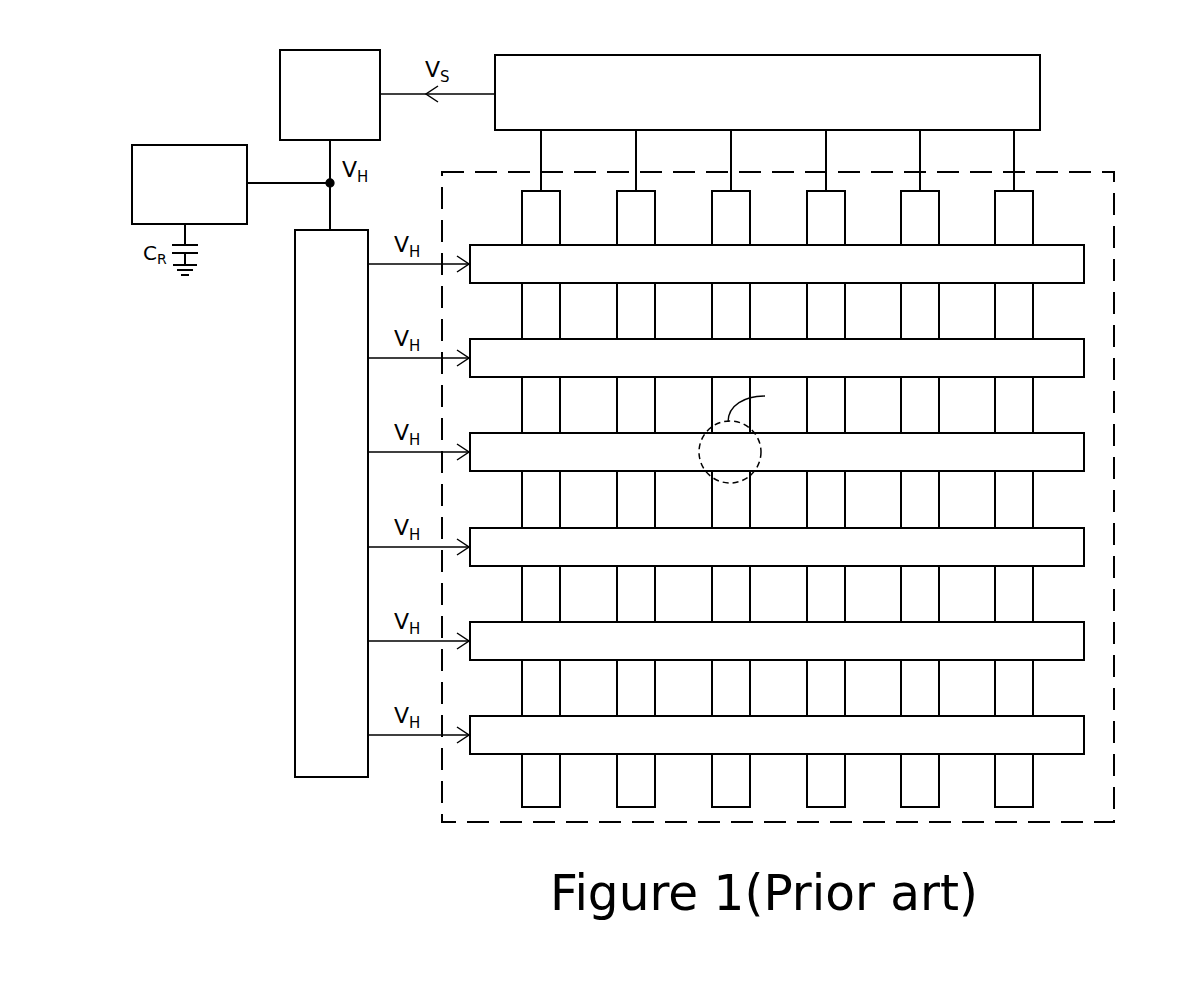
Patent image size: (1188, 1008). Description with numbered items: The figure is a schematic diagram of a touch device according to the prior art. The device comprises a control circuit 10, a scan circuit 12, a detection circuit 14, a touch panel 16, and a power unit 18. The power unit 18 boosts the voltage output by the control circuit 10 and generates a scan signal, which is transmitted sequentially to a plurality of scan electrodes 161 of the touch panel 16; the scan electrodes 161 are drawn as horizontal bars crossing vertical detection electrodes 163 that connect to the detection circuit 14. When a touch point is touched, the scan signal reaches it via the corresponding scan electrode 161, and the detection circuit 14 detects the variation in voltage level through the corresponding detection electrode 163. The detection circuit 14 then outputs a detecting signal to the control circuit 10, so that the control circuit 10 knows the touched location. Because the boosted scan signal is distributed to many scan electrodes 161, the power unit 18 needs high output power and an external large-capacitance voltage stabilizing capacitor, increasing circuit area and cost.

The control circuit 10 is at (355, 50).
The scan circuit 12 is at (350, 230).
The detection circuit 14 is at (1040, 92).
The touch panel 16 is at (1070, 171).
The power unit 18 is at (175, 145).
The scan electrode 161 is at (1084, 262).
The detection electrode 163 is at (967, 210).